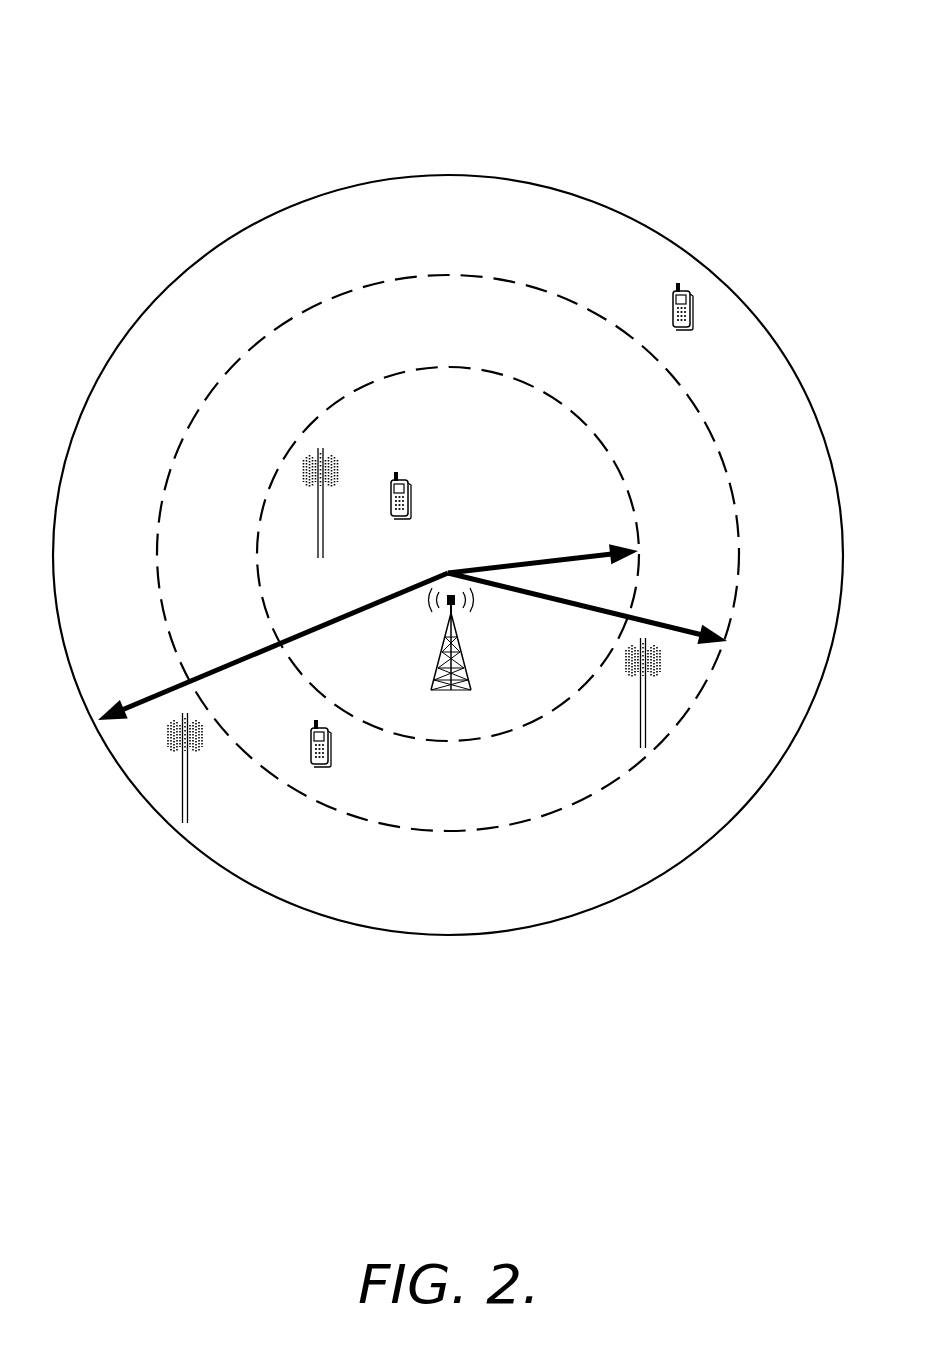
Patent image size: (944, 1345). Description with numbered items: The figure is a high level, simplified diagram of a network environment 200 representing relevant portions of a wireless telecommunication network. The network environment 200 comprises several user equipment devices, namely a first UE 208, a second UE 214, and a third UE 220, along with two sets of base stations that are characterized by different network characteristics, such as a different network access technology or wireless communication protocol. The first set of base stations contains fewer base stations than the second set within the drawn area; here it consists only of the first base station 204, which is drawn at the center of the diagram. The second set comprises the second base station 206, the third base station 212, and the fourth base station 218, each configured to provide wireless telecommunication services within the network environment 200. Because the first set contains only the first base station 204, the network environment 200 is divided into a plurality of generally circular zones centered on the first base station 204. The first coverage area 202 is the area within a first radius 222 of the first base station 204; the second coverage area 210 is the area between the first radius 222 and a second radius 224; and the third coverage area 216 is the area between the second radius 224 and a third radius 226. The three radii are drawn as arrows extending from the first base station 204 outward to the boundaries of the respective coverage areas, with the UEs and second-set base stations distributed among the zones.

The network environment 200 is at (793, 66).
The first coverage area 202 is at (468, 422).
The first base station 204 is at (442, 690).
The second base station 206 is at (324, 506).
The first UE 208 is at (398, 477).
The second coverage area 210 is at (468, 334).
The third base station 212 is at (641, 695).
The second UE 214 is at (318, 763).
The third coverage area 216 is at (468, 237).
The fourth base station 218 is at (188, 770).
The third UE 220 is at (681, 327).
The first radius 222 is at (548, 563).
The second radius 224 is at (654, 622).
The third radius 226 is at (232, 663).